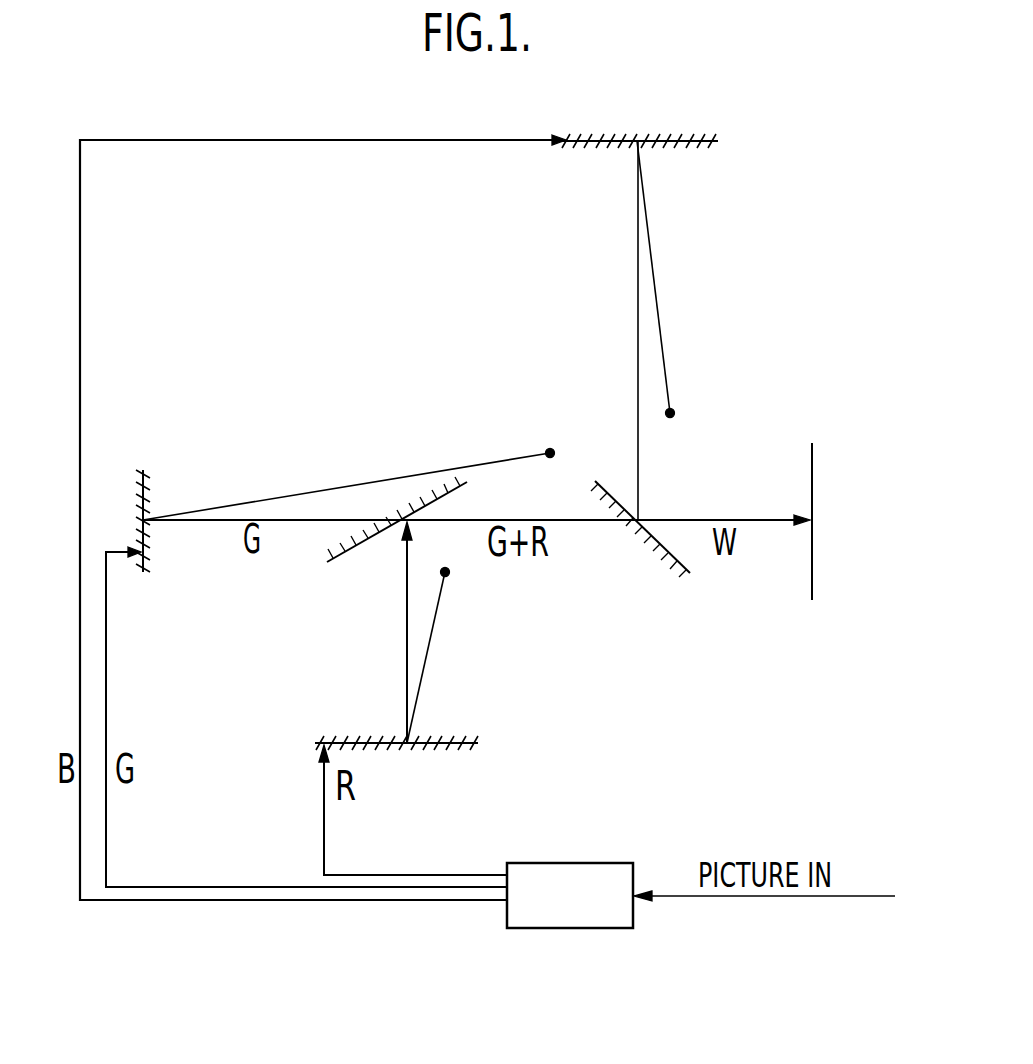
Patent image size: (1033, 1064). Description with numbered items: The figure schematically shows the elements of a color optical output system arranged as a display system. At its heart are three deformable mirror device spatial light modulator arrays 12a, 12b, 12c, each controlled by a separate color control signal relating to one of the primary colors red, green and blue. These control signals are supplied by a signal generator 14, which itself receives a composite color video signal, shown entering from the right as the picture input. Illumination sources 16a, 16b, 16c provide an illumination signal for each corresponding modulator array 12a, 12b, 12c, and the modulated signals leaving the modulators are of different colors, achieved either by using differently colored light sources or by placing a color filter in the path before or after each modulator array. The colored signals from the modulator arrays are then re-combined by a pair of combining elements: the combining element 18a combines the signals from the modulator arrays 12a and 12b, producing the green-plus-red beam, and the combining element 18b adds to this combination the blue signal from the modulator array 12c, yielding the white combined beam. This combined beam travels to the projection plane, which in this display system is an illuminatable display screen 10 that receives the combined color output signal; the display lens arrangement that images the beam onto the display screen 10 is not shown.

The display screen 10 is at (812, 588).
The deformable mirror device spatial light modulator array 12a is at (478, 745).
The deformable mirror device spatial light modulator array 12b is at (138, 572).
The deformable mirror device spatial light modulator array 12c is at (708, 146).
The signal generator 14 is at (540, 930).
The illumination source 16a is at (448, 576).
The illumination source 16b is at (548, 449).
The illumination source 16c is at (673, 412).
The combining element 18a is at (462, 486).
The combining element 18b is at (690, 573).